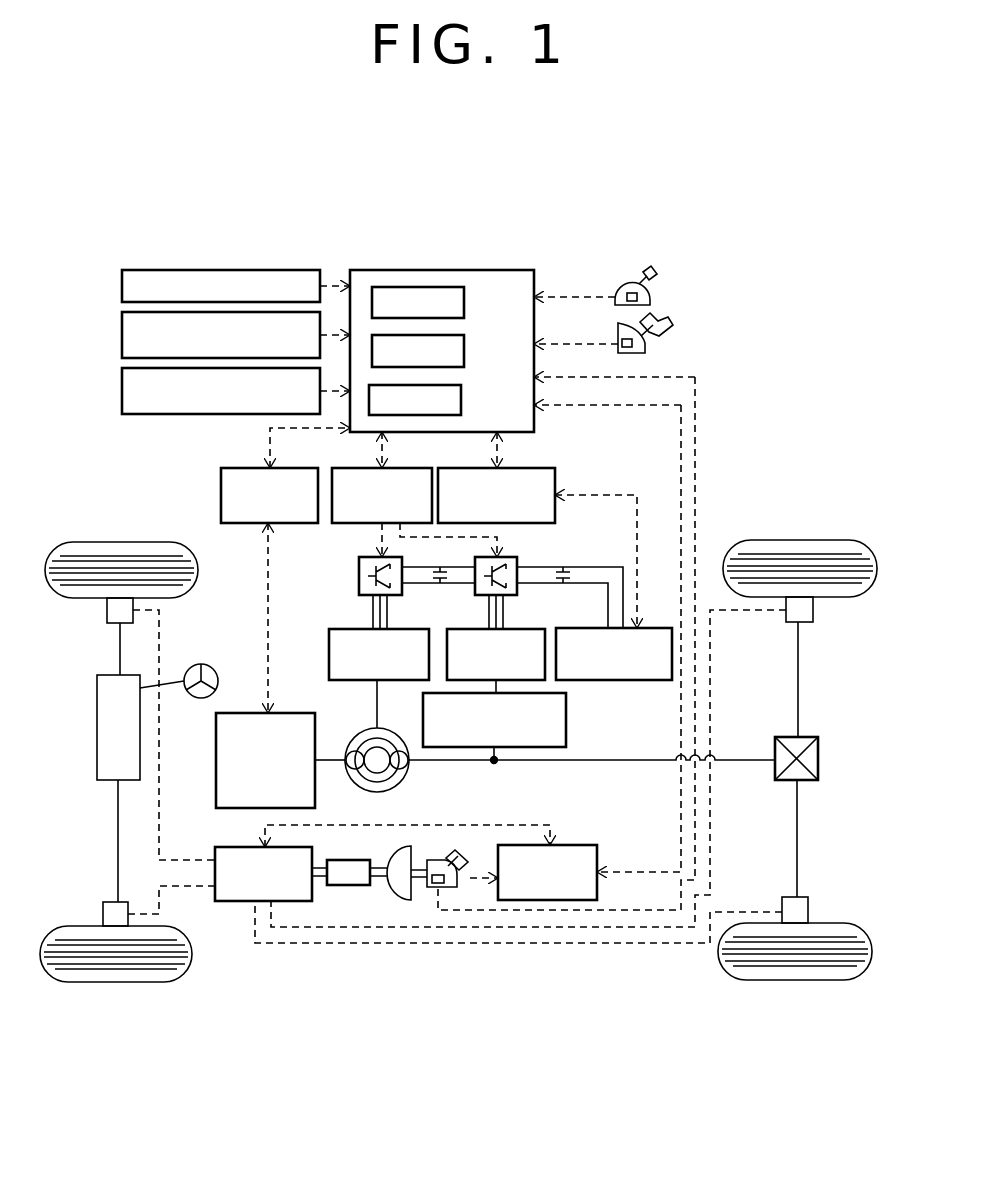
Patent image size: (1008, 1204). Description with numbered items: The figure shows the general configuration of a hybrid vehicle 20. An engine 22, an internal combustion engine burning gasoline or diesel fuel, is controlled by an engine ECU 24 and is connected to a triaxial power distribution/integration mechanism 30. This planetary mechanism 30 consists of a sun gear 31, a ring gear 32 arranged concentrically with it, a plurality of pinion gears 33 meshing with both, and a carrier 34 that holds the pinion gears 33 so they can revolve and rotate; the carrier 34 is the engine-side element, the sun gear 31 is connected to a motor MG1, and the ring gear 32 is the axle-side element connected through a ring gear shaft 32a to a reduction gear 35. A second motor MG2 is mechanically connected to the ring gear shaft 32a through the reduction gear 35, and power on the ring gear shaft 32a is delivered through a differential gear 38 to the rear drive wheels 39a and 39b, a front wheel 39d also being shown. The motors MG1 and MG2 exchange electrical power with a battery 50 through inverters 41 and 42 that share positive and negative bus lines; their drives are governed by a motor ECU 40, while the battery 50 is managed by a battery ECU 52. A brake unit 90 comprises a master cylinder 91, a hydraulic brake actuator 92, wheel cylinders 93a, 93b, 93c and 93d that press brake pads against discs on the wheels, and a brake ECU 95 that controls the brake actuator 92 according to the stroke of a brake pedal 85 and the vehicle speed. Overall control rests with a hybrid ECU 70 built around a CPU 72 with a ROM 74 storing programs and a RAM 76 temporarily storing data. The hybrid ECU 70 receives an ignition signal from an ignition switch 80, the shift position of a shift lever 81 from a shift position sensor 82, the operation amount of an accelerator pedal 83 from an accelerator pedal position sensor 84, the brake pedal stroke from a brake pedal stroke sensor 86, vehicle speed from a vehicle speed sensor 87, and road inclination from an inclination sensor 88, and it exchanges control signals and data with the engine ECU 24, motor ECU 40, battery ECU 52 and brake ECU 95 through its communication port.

The hybrid vehicle 20 is at (813, 392).
The engine 22 is at (215, 772).
The engine ECU 24 is at (254, 524).
The power distribution/integration mechanism 30 is at (413, 752).
The sun gear 31 is at (363, 786).
The ring gear 32 is at (392, 786).
The ring gear shaft 32a is at (497, 762).
The pinion gears 33 is at (409, 762).
The carrier 34 is at (360, 736).
The reduction gear 35 is at (567, 730).
The differential gear 38 is at (773, 782).
The wheel 39a is at (792, 981).
The wheel 39b is at (805, 539).
The wheel 39d is at (122, 541).
The motor ECU 40 is at (346, 524).
The inverter 41 is at (358, 580).
The inverter 42 is at (517, 560).
The battery 50 is at (611, 681).
The battery ECU 52 is at (556, 488).
The hybrid ECU 70 is at (442, 317).
The CPU 72 is at (464, 300).
The ROM 74 is at (464, 351).
The RAM 76 is at (461, 400).
The ignition switch 80 is at (122, 287).
The shift lever 81 is at (652, 279).
The shift position sensor 82 is at (652, 299).
The accelerator pedal 83 is at (673, 326).
The accelerator pedal position sensor 84 is at (646, 350).
The brake pedal 85 is at (466, 868).
The brake pedal stroke sensor 86 is at (446, 886).
The vehicle speed sensor 87 is at (122, 337).
The inclination sensor 88 is at (122, 390).
The brake unit 90 is at (433, 922).
The master cylinder 91 is at (362, 886).
The brake actuator 92 is at (290, 902).
The wheel cylinder 93a is at (102, 913).
The wheel cylinder 93b is at (106, 612).
The wheel cylinder 93c is at (808, 908).
The wheel cylinder 93d is at (813, 613).
The brake ECU 95 is at (598, 889).
The motor MG1 is at (400, 628).
The motor MG2 is at (517, 628).